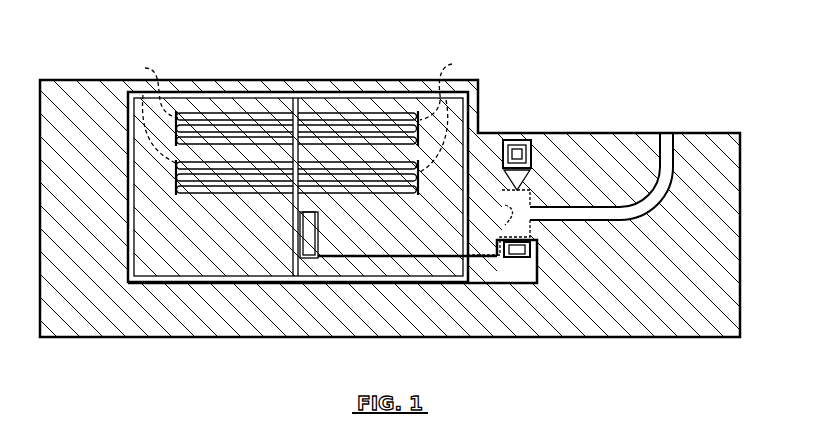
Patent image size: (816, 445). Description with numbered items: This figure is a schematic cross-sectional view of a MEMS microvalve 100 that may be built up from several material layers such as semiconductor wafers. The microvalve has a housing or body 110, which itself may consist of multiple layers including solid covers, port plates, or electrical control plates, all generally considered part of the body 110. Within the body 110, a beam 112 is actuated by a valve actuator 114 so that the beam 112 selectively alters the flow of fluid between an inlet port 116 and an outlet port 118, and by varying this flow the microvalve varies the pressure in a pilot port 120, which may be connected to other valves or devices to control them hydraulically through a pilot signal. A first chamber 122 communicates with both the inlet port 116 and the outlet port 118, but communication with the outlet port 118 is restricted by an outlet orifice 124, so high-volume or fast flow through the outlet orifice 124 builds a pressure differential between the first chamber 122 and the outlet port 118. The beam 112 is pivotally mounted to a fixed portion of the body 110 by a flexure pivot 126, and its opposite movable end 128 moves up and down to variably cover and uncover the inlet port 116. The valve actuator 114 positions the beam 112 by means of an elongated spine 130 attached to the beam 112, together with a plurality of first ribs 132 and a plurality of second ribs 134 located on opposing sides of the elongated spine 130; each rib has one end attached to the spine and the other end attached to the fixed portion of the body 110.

The MEMS microvalve 100 is at (205, 58).
The body 110 is at (76, 311).
The beam 112 is at (450, 265).
The valve actuator 114 is at (250, 205).
The inlet port 116 is at (540, 233).
The outlet port 118 is at (530, 140).
The pilot port 120 is at (658, 133).
The first chamber 122 is at (502, 203).
The outlet orifice 124 is at (533, 175).
The flexure pivot 126 is at (330, 258).
The movable end 128 is at (512, 283).
The elongated spine 130 is at (303, 97).
The first ribs 132 is at (145, 68).
The second ribs 134 is at (452, 64).